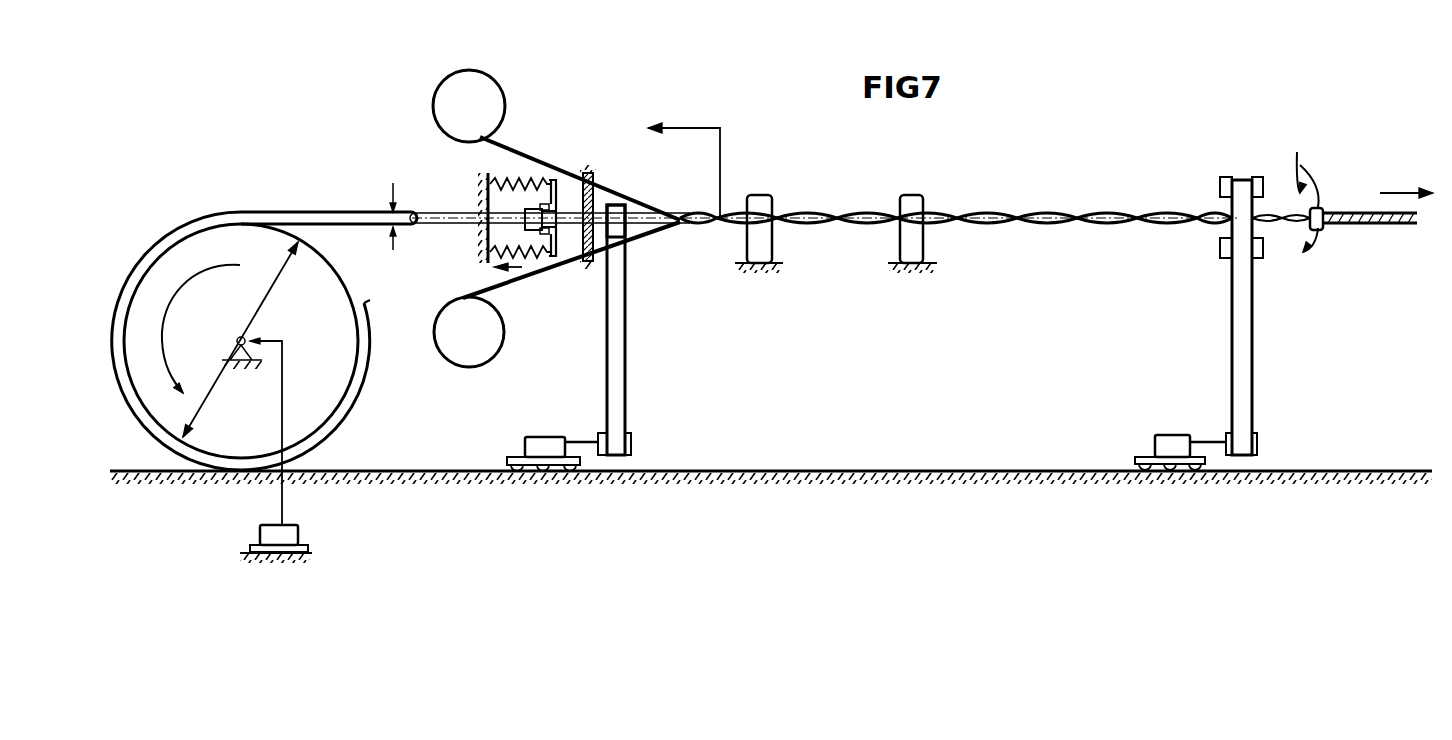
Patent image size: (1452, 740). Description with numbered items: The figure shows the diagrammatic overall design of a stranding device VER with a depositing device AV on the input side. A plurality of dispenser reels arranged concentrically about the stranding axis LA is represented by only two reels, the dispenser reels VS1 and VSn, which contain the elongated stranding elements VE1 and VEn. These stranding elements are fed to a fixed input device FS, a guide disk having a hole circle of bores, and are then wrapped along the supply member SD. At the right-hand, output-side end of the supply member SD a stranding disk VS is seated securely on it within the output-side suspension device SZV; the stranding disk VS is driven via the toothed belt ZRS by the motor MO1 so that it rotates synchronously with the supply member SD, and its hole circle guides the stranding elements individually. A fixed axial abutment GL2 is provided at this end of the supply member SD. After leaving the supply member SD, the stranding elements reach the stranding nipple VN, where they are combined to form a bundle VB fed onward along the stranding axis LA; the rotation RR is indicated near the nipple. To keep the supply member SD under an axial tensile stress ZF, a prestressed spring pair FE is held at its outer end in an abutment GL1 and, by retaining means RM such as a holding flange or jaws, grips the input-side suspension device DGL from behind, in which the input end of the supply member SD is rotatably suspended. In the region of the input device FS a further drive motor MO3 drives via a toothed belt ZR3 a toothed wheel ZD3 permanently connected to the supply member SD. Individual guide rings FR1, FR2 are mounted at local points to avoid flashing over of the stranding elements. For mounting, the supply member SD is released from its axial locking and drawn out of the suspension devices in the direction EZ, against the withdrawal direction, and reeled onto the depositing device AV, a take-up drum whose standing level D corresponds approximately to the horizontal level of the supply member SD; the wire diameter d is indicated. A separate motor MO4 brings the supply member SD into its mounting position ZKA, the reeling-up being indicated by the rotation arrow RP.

The depositing device AV is at (228, 296).
The mounting position ZKA is at (290, 217).
The rotation arrow RP is at (168, 285).
The standing level D is at (240, 339).
The strand thickness d is at (385, 209).
The separate motor MO4 is at (291, 533).
The dispenser reel VS1 is at (471, 90).
The dispenser reel VSn is at (482, 345).
The stranding element VE1 is at (515, 150).
The stranding element VEn is at (510, 287).
The abutment GL1 is at (483, 236).
The spring pair FE is at (520, 176).
The retaining means RM is at (548, 204).
The suspension device DGL is at (563, 242).
The axial tensile stress ZF is at (483, 269).
The input device FS is at (623, 160).
The toothed wheel ZD3 is at (640, 203).
The toothed belt ZR3 is at (617, 395).
The further drive motor MO3 is at (533, 443).
The direction EZ is at (692, 128).
The supply member SD is at (1042, 212).
The guide ring FR1 is at (757, 213).
The guide ring FR2 is at (908, 212).
The stranding device VER is at (920, 522).
The toothed belt ZRS is at (1240, 388).
The axial abutment GL2 is at (1220, 187).
The stranding disk VS is at (1258, 177).
The suspension device SZV is at (1218, 122).
The motor MO1 is at (1158, 448).
The stranding nipple VN is at (1317, 207).
The rotation direction of rotor RR is at (1320, 190).
The bundle VB is at (1355, 228).
The stranding axis LA is at (1406, 176).